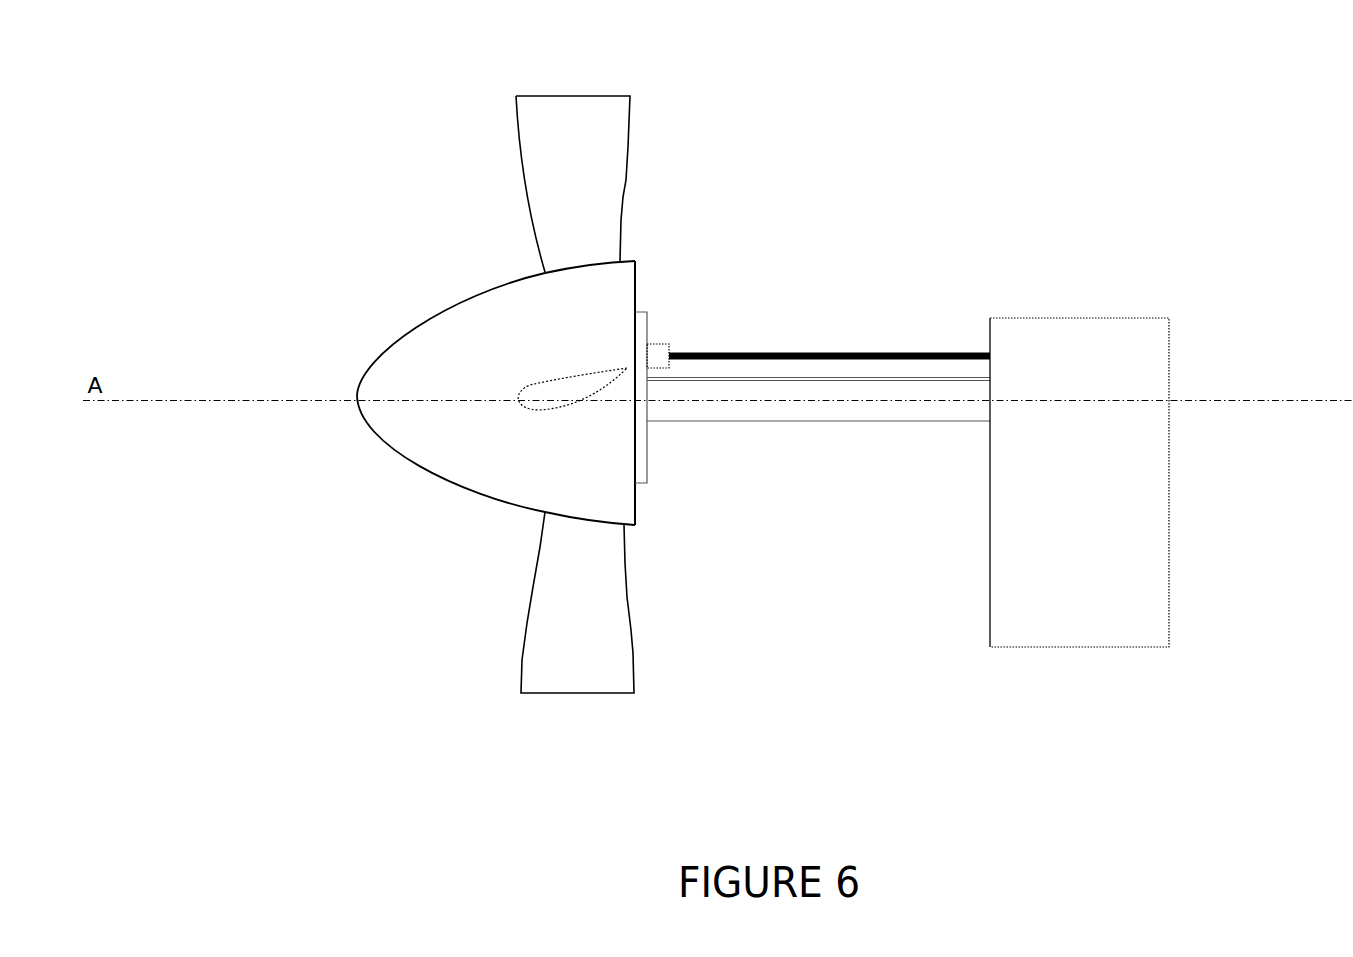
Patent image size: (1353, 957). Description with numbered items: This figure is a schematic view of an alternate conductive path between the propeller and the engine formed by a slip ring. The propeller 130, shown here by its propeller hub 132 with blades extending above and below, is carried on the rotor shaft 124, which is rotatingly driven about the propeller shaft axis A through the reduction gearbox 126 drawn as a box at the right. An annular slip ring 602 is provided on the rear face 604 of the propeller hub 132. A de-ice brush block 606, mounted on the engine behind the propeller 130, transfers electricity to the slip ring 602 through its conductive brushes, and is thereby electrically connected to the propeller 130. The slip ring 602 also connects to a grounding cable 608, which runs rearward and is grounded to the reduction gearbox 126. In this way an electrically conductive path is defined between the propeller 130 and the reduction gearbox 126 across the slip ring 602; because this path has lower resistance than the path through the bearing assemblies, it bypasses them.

The rotor shaft 124 is at (830, 416).
The reduction gearbox 126 is at (1067, 647).
The propeller 130 is at (567, 103).
The propeller hub 132 is at (483, 357).
The slip ring 602 is at (642, 444).
The rear face 604 is at (637, 512).
The de-ice brush block 606 is at (655, 342).
The grounding cable 608 is at (895, 355).